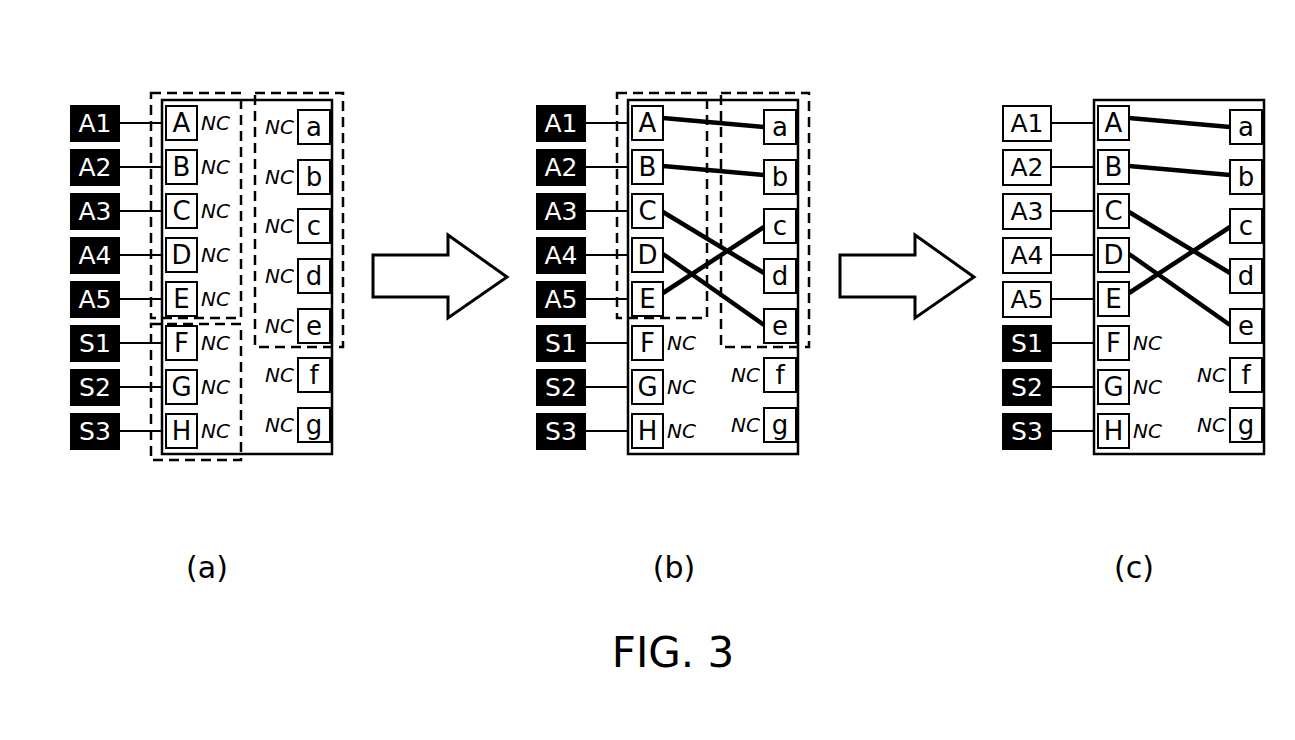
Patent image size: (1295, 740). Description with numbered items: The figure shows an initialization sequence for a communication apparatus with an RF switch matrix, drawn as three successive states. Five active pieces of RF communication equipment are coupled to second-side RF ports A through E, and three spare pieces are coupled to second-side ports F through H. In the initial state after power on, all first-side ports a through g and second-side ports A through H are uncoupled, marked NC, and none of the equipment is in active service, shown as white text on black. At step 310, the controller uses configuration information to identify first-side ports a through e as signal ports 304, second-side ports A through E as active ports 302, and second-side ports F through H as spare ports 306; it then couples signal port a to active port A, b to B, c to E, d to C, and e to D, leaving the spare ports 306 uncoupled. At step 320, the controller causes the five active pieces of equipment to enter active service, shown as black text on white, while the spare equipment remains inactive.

The active ports 302 is at (190, 93).
The signal ports 304 is at (293, 93).
The spare ports 306 is at (165, 461).
The port identification and coupling step 310 is at (392, 268).
The active service step 320 is at (907, 257).